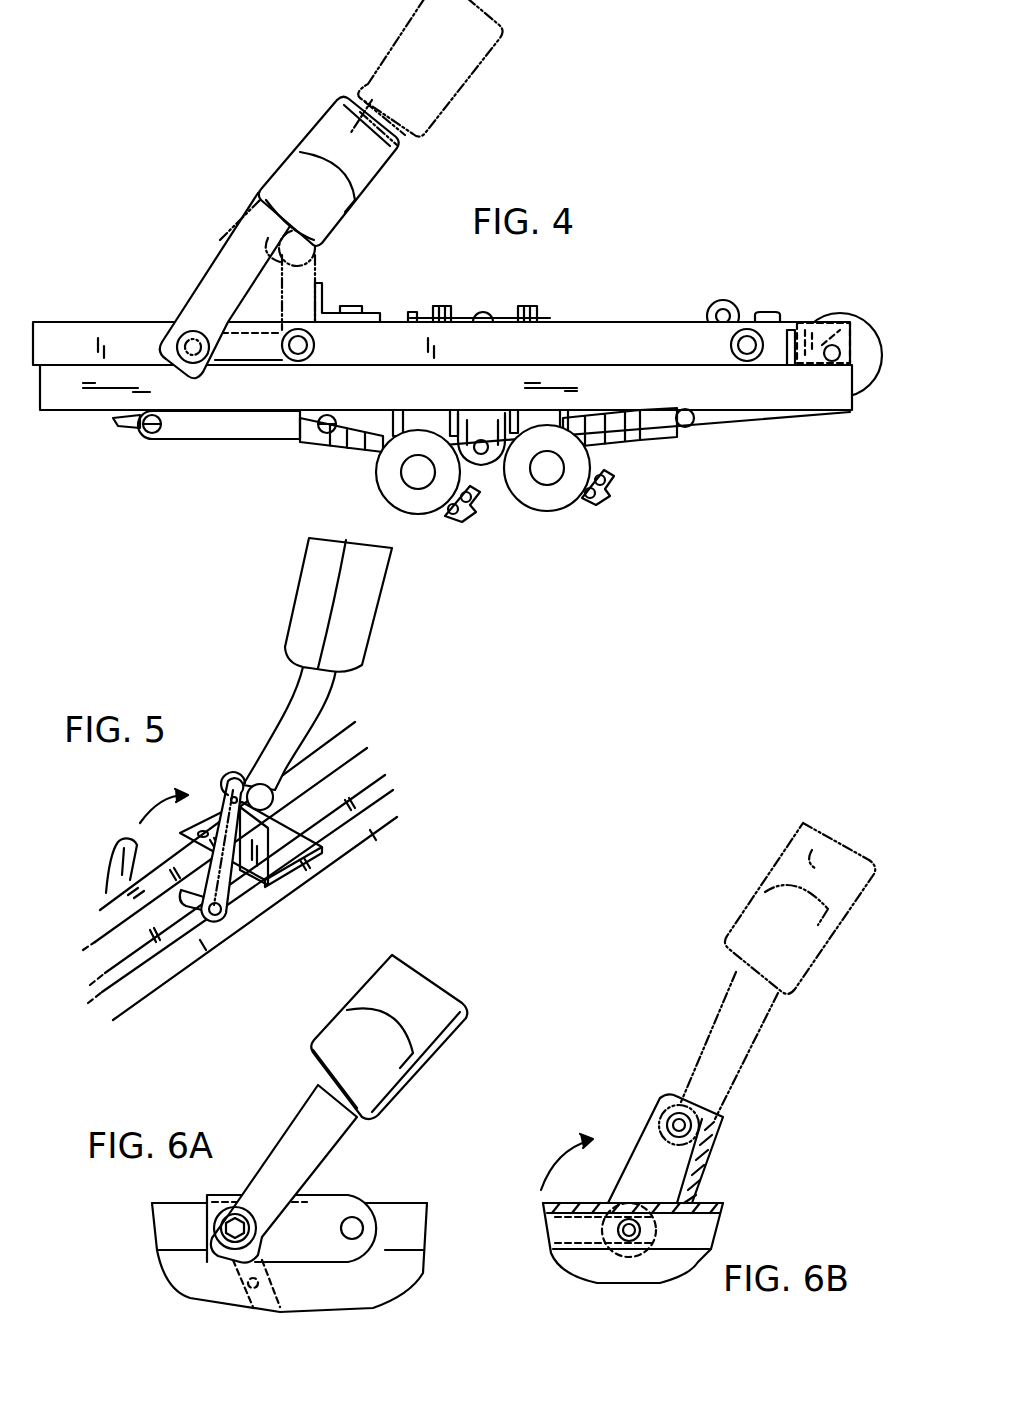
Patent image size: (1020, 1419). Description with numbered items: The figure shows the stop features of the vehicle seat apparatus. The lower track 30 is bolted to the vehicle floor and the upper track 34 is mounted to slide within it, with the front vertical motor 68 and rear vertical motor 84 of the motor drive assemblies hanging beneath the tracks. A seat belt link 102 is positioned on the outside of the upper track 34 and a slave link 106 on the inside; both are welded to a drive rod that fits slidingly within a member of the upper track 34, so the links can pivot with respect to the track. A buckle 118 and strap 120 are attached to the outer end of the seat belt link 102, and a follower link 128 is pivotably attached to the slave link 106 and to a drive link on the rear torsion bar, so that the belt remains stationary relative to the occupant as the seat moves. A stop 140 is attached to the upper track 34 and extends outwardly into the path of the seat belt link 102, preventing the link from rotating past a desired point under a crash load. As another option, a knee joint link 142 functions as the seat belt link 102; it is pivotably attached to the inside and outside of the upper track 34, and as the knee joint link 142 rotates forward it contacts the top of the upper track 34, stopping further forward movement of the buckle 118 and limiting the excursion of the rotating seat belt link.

In FIG. 4, the lower track 30 is at (748, 393).
In FIG. 5, the lower track 30 is at (130, 990).
In FIG. 4, the upper track 34 is at (605, 345).
In FIG. 5, the upper track 34 is at (100, 913).
In FIG. 6A, the upper track 34 is at (410, 1208).
In FIG. 4, the front vertical motor 68 is at (540, 500).
In FIG. 4, the rear vertical motor 84 is at (418, 506).
In FIG. 4, the seat belt link 102 is at (242, 352).
In FIG. 5, the seat belt link 102 is at (233, 813).
In FIG. 4, the slave link 106 is at (340, 440).
In FIG. 4, the buckle 118 is at (375, 62).
In FIG. 5, the buckle 118 is at (363, 602).
In FIG. 6A, the buckle 118 is at (420, 990).
In FIG. 6B, the buckle 118 is at (818, 870).
In FIG. 4, the strap 120 is at (255, 263).
In FIG. 5, the strap 120 is at (318, 693).
In FIG. 6A, the strap 120 is at (287, 1147).
In FIG. 6B, the strap 120 is at (711, 1060).
In FIG. 4, the follower link 128 is at (180, 432).
In FIG. 4, the stop 140 is at (343, 308).
In FIG. 5, the stop 140 is at (293, 850).
In FIG. 6A, the knee joint link 142 is at (313, 1253).
In FIG. 6B, the knee joint link 142 is at (704, 1150).